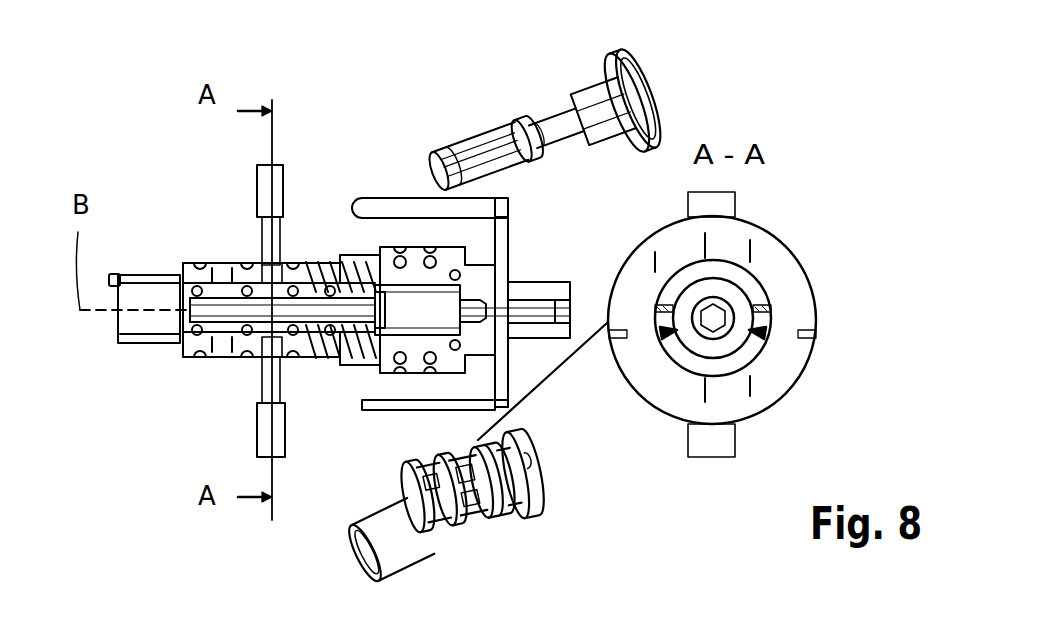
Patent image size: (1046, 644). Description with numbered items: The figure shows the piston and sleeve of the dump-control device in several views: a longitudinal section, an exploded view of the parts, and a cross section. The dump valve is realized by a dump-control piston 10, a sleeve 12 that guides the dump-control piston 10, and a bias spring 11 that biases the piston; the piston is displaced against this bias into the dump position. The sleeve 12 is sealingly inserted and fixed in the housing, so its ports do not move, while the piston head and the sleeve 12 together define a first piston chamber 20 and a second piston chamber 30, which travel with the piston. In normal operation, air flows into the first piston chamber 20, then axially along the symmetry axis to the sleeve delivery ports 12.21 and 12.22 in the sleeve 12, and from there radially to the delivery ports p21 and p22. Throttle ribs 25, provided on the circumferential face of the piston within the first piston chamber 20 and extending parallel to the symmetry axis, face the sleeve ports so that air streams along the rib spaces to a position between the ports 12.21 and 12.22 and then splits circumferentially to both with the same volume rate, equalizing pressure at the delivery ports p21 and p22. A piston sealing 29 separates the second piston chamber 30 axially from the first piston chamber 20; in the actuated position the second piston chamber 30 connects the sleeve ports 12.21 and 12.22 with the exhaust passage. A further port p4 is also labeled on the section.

The dump-control piston 10 is at (567, 97).
The bias spring 11 is at (340, 255).
The sleeve 12 is at (185, 265).
The sleeve delivery port 12.21 is at (262, 350).
The sleeve delivery port 12.22 is at (262, 270).
The first piston chamber 20 is at (507, 173).
The throttle ribs 25 is at (483, 137).
The piston sealing 29 is at (515, 120).
The second piston chamber 30 is at (562, 143).
The port p4 is at (570, 300).
The first delivery port p21 is at (260, 457).
The second delivery port p22 is at (258, 165).